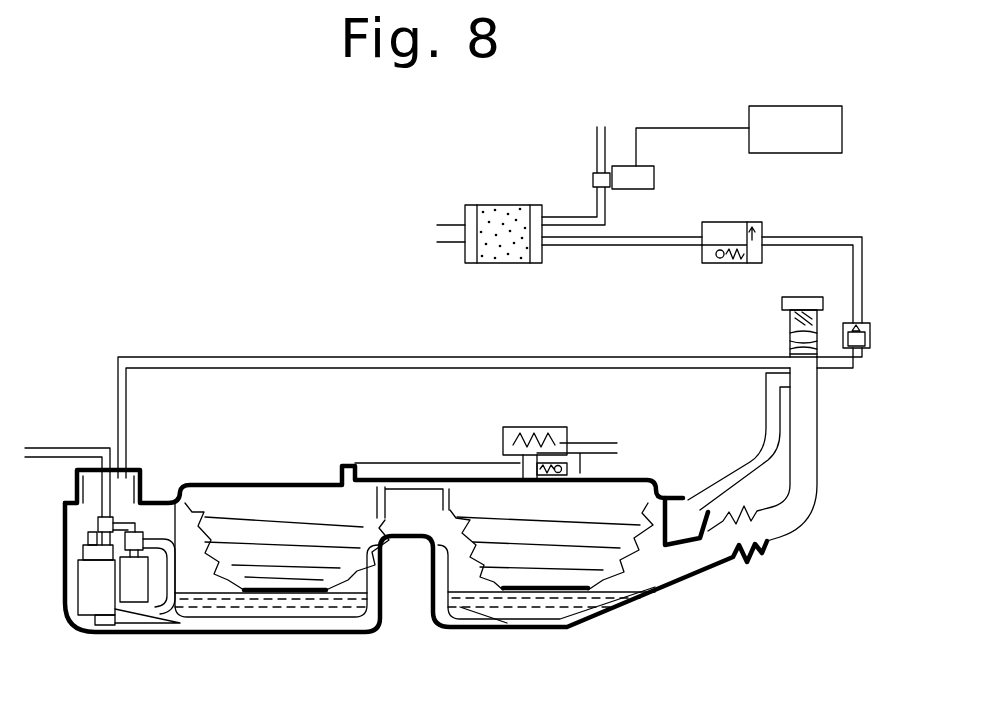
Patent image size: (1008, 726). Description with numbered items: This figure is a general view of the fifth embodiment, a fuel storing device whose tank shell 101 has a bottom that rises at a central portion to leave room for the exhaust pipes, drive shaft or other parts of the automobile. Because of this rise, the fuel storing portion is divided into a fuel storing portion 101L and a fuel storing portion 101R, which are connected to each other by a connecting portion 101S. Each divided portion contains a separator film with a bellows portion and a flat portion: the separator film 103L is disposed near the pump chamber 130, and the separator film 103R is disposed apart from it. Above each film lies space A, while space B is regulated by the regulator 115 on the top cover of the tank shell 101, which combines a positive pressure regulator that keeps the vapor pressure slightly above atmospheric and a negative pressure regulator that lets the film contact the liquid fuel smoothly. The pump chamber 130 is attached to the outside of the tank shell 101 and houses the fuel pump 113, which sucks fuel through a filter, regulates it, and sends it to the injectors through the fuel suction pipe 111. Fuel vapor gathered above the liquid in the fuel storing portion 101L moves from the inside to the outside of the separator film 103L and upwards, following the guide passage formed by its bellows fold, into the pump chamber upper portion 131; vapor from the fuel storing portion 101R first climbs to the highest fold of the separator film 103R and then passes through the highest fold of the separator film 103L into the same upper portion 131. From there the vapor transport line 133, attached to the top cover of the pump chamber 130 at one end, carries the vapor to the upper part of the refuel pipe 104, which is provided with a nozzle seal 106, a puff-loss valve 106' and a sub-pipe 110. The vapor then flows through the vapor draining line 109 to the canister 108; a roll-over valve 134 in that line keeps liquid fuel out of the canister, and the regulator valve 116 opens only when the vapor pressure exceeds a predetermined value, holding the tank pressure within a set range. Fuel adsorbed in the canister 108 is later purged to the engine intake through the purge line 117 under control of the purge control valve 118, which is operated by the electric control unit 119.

The tank shell 101 is at (445, 606).
The fuel storing portion 101L is at (210, 590).
The fuel storing portion 101R is at (617, 583).
The connecting portion 101S is at (413, 510).
The separator film 103L is at (275, 598).
The separator film 103R is at (543, 592).
The refuel pipe 104 is at (845, 450).
The nozzle seal 106 is at (759, 327).
The puff-loss valve 106' is at (833, 387).
The canister 108 is at (497, 205).
The vapor draining line 109 is at (798, 238).
The sub-pipe 110 is at (727, 470).
The fuel suction pipe 111 is at (43, 448).
The fuel pump 113 is at (95, 600).
The regulator 115 is at (530, 422).
The regulator valve 116 is at (690, 259).
The purge line 117 is at (597, 137).
The purge control valve 118 is at (655, 178).
The electric control unit 119 is at (760, 118).
The pump chamber 130 is at (90, 516).
The pump chamber upper portion 131 is at (93, 490).
The vapor transport line 133 is at (305, 357).
The roll-over valve 134 is at (862, 325).
The variable volume space A is at (187, 543).
The space B is at (277, 503).